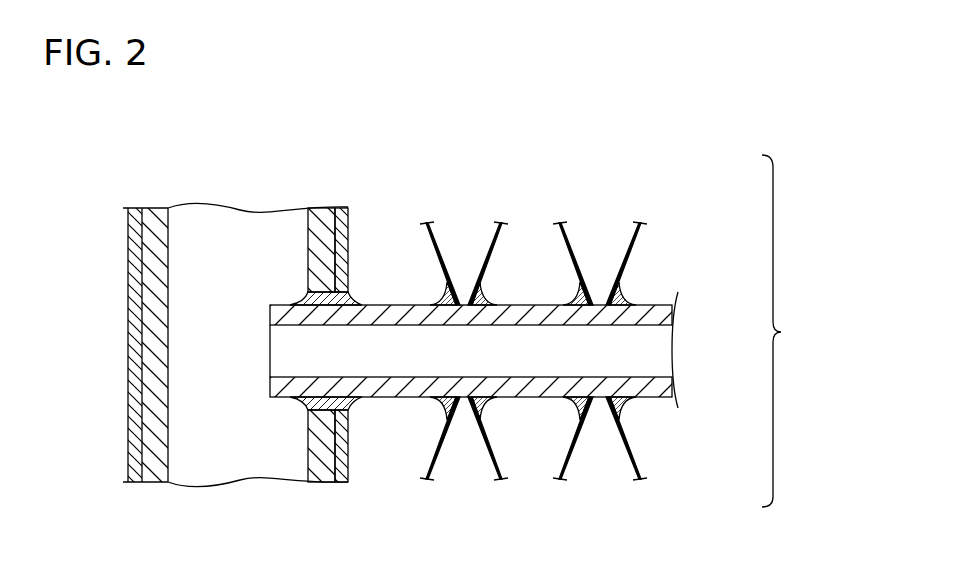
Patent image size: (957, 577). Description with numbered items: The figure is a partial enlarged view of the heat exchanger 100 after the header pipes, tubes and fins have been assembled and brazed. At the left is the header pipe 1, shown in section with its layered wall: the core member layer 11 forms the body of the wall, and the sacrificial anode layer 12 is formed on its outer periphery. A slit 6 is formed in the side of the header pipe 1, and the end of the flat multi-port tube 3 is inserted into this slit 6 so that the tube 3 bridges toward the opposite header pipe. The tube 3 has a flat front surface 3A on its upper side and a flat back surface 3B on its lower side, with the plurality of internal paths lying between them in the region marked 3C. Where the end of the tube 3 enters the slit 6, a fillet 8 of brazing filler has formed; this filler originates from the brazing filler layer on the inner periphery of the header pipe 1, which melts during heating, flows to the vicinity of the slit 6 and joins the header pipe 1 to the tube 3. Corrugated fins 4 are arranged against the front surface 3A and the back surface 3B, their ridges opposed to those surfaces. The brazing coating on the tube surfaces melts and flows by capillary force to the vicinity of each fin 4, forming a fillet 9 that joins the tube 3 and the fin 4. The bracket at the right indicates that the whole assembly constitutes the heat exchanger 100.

The header pipe 1 is at (205, 310).
The core member layer 11 is at (152, 212).
The sacrificial anode layer 12 is at (136, 210).
The tube 3 is at (508, 301).
The front surface 3A is at (677, 298).
The back surface 3B is at (669, 398).
The insulating core 3C is at (655, 348).
The corrugated fin 4 is at (433, 260).
The slit 6 is at (322, 408).
The fillet 8 is at (300, 301).
The fillet 9 is at (438, 301).
The heat exchanger 100 is at (796, 331).